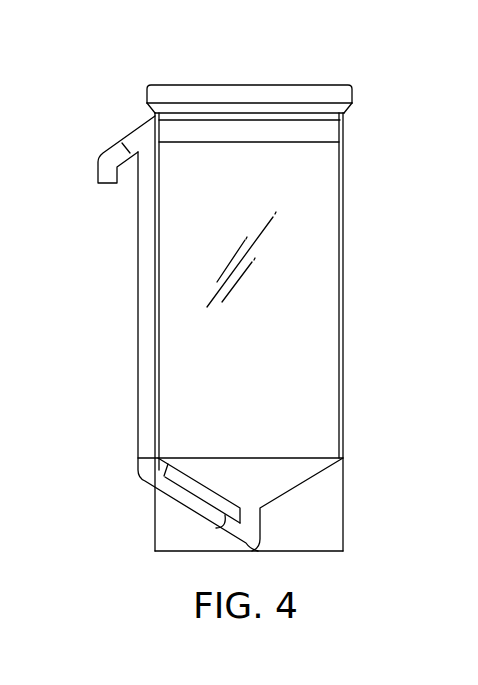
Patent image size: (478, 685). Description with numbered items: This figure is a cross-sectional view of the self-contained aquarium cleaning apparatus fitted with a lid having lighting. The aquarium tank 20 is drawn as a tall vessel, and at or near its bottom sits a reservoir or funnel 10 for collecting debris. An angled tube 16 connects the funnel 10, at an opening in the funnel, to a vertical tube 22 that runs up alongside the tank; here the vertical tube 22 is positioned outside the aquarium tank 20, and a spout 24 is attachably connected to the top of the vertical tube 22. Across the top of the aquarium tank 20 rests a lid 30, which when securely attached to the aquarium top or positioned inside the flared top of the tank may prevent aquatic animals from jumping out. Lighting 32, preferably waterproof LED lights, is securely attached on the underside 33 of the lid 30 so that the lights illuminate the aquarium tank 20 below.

The funnel 10 is at (277, 463).
The angled tube 16 is at (173, 497).
The aquarium tank 20 is at (305, 299).
The vertical tube 22 is at (143, 362).
The spout 24 is at (102, 155).
The lid 30 is at (244, 103).
The lighting 32 is at (312, 130).
The underside 33 is at (192, 120).